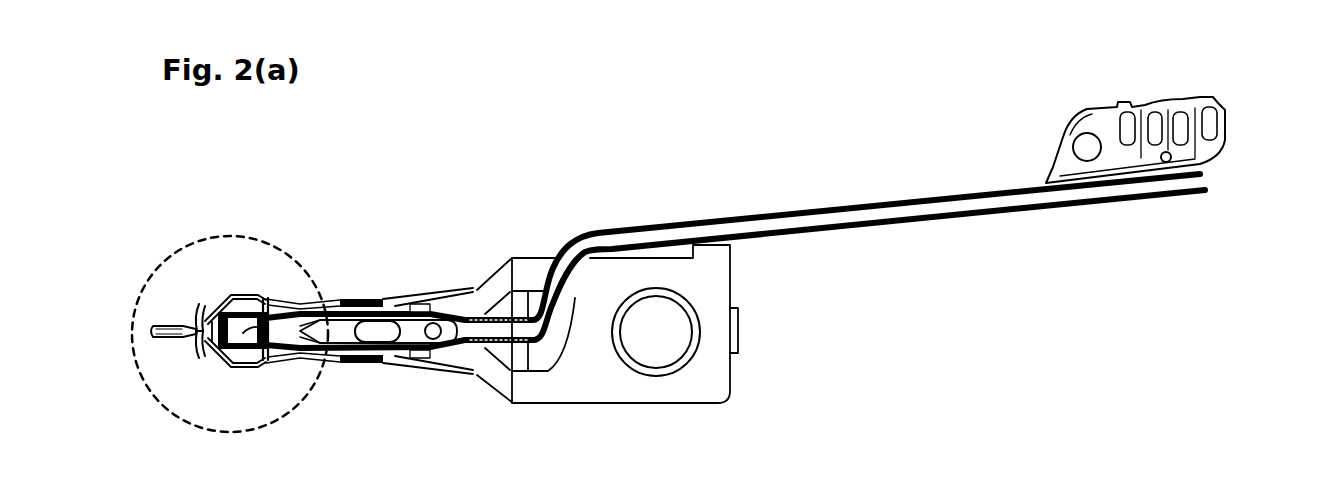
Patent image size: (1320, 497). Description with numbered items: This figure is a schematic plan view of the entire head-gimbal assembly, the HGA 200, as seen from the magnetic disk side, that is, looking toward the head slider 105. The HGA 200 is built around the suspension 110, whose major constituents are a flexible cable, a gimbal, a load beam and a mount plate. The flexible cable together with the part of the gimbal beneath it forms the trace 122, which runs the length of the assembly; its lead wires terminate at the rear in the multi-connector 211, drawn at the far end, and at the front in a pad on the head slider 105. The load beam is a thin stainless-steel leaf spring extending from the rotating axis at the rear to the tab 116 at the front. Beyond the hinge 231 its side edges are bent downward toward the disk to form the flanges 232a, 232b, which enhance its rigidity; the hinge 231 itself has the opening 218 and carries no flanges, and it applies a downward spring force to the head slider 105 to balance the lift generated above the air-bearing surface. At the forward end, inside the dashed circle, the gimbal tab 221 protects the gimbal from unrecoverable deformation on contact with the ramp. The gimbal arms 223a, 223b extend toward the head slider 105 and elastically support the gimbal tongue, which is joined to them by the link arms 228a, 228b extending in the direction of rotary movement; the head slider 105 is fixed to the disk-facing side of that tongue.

The head slider 105 is at (288, 362).
The suspension 110 is at (352, 278).
The tab 116 is at (166, 326).
The trace 122 is at (822, 208).
The HGA 200 is at (540, 205).
The multi-connector 211 is at (1248, 90).
The opening 218 is at (492, 288).
The gimbal tab 221 is at (197, 305).
The gimbal arm 223a is at (236, 295).
The gimbal arm 223b is at (236, 368).
The link arm 228a is at (266, 300).
The link arm 228b is at (266, 365).
The hinge 231 is at (474, 393).
The flange 232a is at (416, 296).
The flange 232b is at (404, 371).